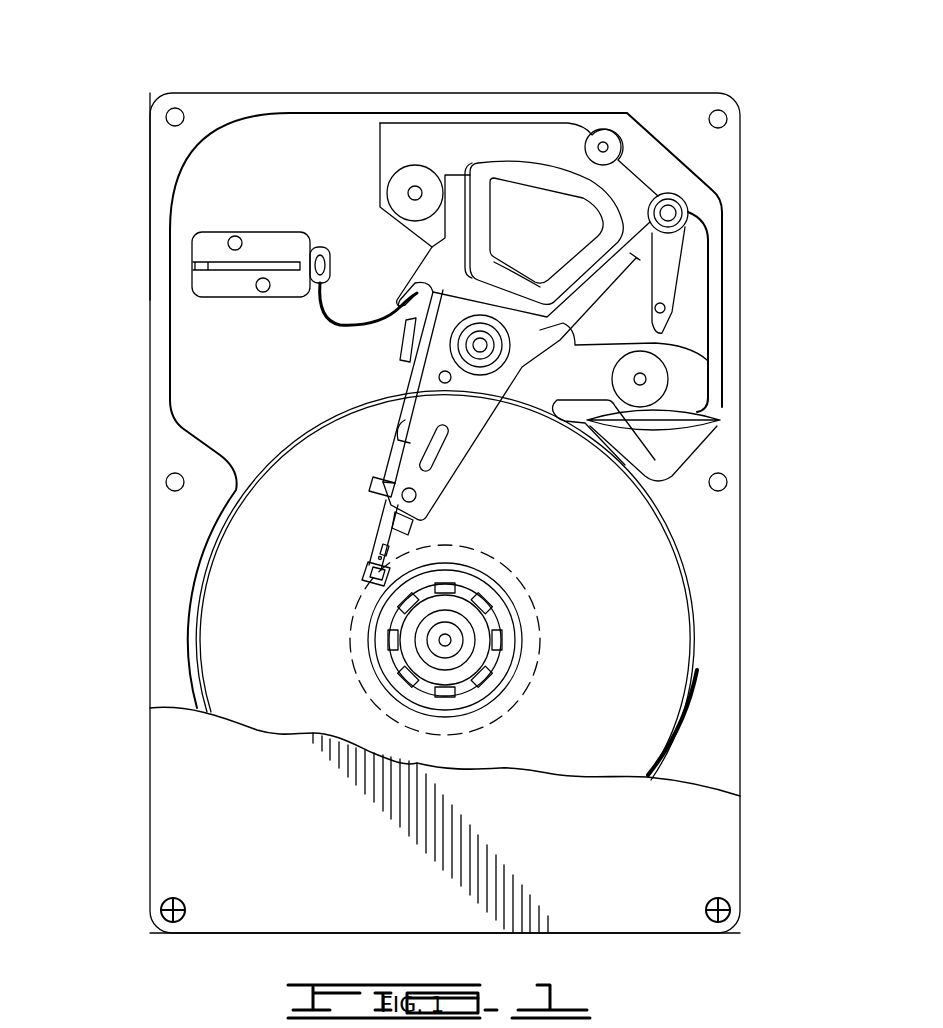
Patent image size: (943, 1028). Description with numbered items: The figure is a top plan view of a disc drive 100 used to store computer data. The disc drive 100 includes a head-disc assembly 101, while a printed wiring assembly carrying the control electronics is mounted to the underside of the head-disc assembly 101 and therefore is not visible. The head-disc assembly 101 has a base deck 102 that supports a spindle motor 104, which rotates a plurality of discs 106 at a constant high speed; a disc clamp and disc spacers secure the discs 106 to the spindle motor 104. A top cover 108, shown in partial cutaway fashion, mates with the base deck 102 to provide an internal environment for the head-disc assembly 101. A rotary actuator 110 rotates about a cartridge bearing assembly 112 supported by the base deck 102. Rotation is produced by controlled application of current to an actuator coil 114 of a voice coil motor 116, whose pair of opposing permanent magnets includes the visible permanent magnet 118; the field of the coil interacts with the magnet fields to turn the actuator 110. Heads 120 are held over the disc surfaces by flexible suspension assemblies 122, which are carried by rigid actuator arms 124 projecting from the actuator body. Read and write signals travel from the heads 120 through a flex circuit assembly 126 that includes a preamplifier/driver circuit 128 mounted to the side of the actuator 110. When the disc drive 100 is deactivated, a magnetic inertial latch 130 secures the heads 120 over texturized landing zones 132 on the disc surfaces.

The disc drive 100 is at (210, 72).
The head-disc assembly 101 is at (157, 146).
The base deck 102 is at (196, 368).
The spindle motor 104 is at (492, 621).
The discs 106 is at (185, 1027).
The top cover 108 is at (718, 812).
The rotary actuator 110 is at (458, 406).
The cartridge bearing assembly 112 is at (485, 352).
The actuator coil 114 is at (488, 177).
The voice coil motor 116 is at (558, 151).
The permanent magnet 118 is at (638, 325).
The heads 120 is at (372, 572).
The flexible suspension assemblies 122 is at (378, 532).
The actuator arms 124 is at (420, 488).
The flex circuit assembly 126 is at (328, 330).
The preamplifier/driver circuit 128 is at (402, 340).
The magnetic inertial latch 130 is at (674, 250).
The texturized landing zones 132 is at (509, 705).